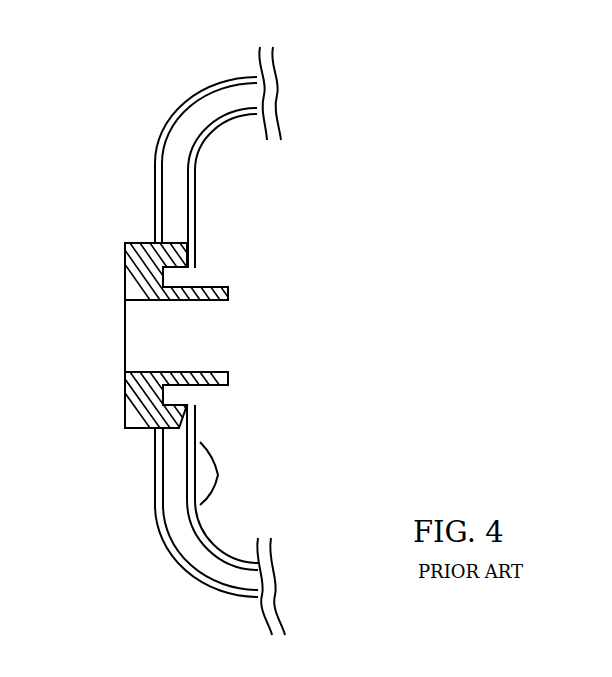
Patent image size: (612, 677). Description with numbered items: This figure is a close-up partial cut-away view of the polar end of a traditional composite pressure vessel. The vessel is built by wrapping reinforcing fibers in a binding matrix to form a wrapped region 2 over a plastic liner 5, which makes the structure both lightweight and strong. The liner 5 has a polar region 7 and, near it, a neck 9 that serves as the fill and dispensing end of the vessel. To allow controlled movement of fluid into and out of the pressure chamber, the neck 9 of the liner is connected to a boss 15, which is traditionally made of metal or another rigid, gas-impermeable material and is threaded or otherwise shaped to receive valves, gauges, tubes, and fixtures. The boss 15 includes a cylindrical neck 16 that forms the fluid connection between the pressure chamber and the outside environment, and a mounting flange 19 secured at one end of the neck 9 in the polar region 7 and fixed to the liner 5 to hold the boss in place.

The wrapped region 2 is at (218, 97).
The plastic liner 5 is at (193, 173).
The polar region 7 is at (218, 475).
The neck 9 is at (173, 281).
The boss 15 is at (113, 412).
The cylindrical neck 16 is at (143, 240).
The mounting flange 19 is at (183, 450).